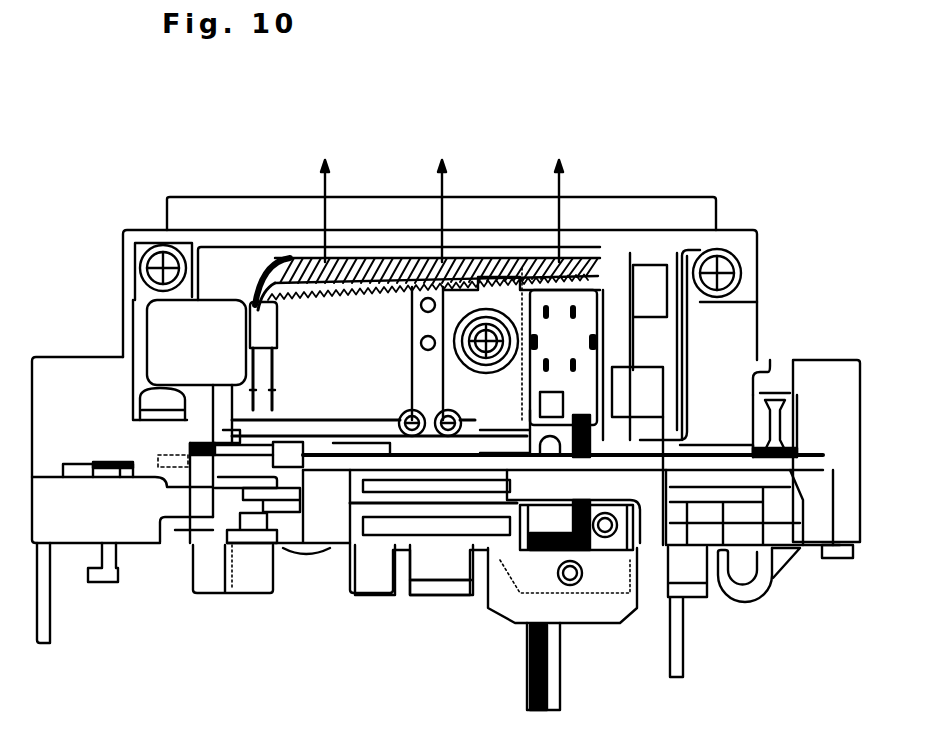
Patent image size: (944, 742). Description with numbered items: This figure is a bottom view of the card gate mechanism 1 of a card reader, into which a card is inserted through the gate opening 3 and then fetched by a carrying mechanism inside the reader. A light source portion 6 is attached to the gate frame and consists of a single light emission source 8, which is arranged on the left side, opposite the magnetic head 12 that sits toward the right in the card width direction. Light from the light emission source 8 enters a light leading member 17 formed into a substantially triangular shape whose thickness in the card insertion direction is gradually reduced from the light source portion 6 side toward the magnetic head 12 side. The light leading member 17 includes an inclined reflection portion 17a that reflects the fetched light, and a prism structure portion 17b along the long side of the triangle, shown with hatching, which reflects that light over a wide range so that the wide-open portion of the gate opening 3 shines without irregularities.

The card gate mechanism 1 is at (80, 228).
The gate opening 3 is at (488, 184).
The light source portion 6 is at (236, 333).
The light emission source 8 is at (268, 331).
The magnetic head 12 is at (567, 300).
The light leading member 17 is at (290, 258).
The reflection portion 17a is at (259, 266).
The prism structure portion 17b is at (376, 300).